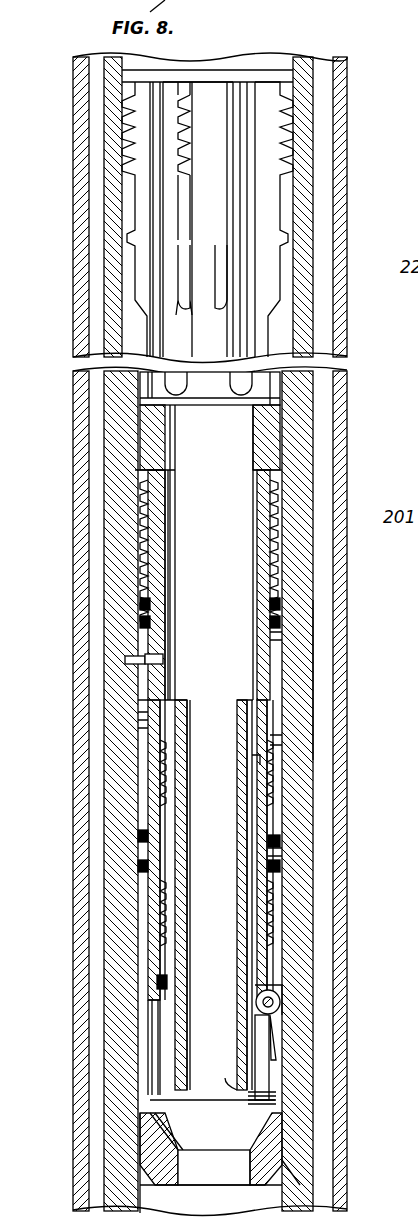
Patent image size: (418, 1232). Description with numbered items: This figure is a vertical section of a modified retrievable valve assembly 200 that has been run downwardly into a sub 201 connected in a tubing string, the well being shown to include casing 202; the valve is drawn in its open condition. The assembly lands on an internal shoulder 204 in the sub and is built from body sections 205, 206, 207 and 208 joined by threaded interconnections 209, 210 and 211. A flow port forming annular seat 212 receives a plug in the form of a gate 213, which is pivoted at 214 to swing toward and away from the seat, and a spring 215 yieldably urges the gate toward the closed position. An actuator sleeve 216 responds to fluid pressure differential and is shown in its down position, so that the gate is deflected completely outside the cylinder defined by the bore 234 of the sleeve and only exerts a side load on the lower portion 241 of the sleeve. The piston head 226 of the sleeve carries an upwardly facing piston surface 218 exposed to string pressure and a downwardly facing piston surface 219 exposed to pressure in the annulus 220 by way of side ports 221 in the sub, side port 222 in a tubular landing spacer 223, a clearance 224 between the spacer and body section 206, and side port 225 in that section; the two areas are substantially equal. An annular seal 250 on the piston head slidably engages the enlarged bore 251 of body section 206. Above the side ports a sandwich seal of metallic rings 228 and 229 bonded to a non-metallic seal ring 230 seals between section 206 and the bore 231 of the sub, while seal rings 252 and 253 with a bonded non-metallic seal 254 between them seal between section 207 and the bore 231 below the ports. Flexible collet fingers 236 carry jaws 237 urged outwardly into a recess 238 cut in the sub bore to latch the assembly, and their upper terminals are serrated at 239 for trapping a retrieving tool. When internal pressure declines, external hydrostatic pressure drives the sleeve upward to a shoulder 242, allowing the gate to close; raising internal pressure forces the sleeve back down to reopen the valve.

The valve assembly 200 is at (282, 520).
The sub 201 is at (318, 680).
The casing 202 is at (340, 703).
The internal shoulder 204 is at (145, 683).
The body section 205 is at (148, 432).
The body section 206 is at (148, 538).
The body section 207 is at (150, 830).
The body section 208 is at (150, 978).
The threaded interconnection 209 is at (140, 500).
The threaded interconnection 210 is at (150, 765).
The threaded interconnection 211 is at (145, 918).
The annular seat 212 is at (160, 1000).
The gate 213 is at (265, 1076).
The pivot 214 is at (278, 1004).
The spring 215 is at (280, 1035).
The sleeve 216 is at (255, 916).
The upwardly facing piston surface 218 is at (250, 705).
The downwardly facing piston surface 219 is at (258, 760).
The annulus 220 is at (98, 604).
The side ports 221 is at (125, 660).
The side port 222 is at (150, 658).
The tubular landing spacer 223 is at (145, 705).
The clearance 224 is at (145, 725).
The side port 225 is at (270, 740).
The piston head 226 is at (280, 690).
The metallic ring 228 is at (280, 582).
The metallic ring 229 is at (290, 626).
The non-metallic seal ring 230 is at (295, 600).
The bore 231 is at (278, 444).
The bore 234 is at (225, 933).
The collet fingers 236 is at (285, 341).
The jaws 237 is at (125, 262).
The recess 238 is at (127, 305).
The serrations 239 is at (300, 147).
The lower portion 241 is at (225, 1080).
The shoulder 242 is at (245, 585).
The annular seal 250 is at (252, 733).
The enlarged bore 251 is at (256, 605).
The seal ring 252 is at (270, 835).
The seal ring 253 is at (272, 868).
The non-metallic seal 254 is at (275, 850).